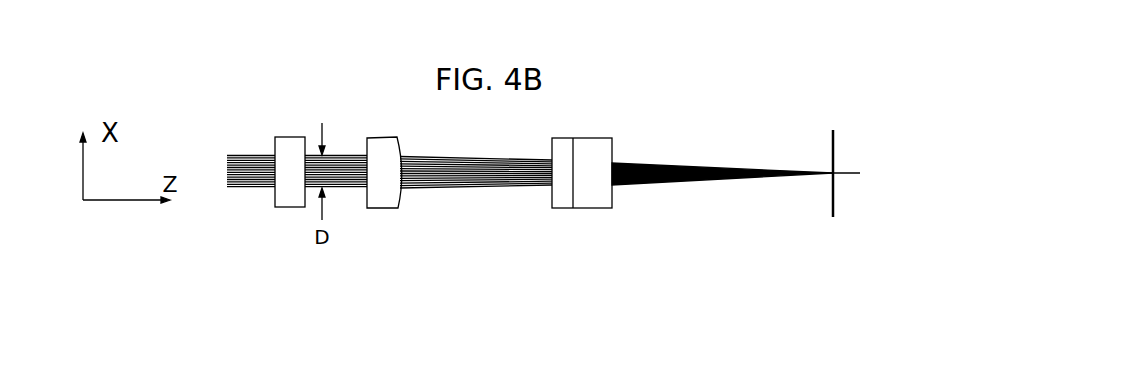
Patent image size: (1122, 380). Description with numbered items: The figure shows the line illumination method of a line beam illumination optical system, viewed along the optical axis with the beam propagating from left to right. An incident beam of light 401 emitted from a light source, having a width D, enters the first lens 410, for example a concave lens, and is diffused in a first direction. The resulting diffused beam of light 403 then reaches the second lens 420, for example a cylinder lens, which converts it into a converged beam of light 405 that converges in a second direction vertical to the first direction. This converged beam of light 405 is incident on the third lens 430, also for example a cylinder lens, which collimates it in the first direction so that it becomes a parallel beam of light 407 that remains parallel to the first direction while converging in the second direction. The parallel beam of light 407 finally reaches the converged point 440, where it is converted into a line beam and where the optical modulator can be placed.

The incident beam of light 401 is at (247, 188).
The first lens 410 is at (293, 207).
The diffused beam of light 403 is at (353, 190).
The second lens 420 is at (388, 208).
The converged beam of light 405 is at (473, 188).
The third lens 430 is at (565, 208).
The parallel beam of light 407 is at (688, 183).
The converged point 440 is at (833, 217).